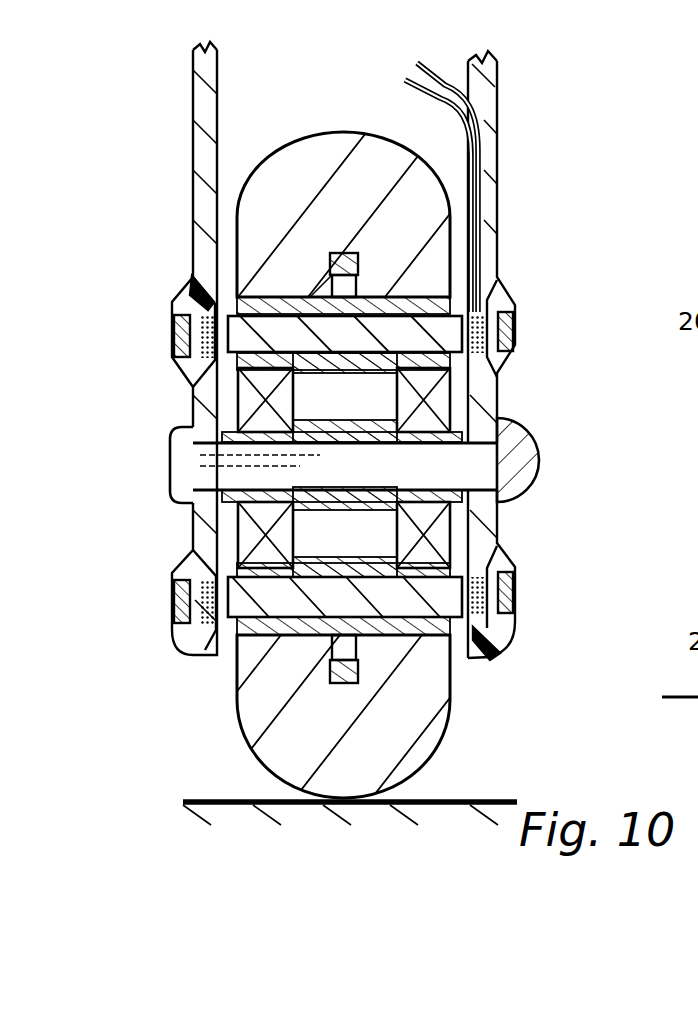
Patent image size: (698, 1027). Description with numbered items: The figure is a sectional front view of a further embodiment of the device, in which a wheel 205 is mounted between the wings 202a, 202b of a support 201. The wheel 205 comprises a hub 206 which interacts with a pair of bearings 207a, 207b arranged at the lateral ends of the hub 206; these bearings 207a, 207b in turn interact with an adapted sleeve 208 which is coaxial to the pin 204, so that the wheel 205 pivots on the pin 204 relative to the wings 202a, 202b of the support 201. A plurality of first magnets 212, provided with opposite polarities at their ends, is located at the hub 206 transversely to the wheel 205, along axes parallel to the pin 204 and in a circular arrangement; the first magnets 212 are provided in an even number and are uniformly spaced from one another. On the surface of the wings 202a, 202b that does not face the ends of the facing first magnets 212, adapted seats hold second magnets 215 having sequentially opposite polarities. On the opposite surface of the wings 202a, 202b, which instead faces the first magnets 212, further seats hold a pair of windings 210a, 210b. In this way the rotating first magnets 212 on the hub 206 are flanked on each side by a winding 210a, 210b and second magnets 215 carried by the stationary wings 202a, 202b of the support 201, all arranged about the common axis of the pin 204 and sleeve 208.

The support 201 is at (508, 62).
The wing 202a is at (490, 102).
The wing 202b is at (183, 128).
The pin 204 is at (507, 465).
The wheel 205 is at (323, 163).
The hub 206 is at (480, 228).
The bearing 207a is at (437, 388).
The bearing 207b is at (227, 387).
The sleeve 208 is at (363, 487).
The winding 210a is at (497, 653).
The winding 210b is at (192, 283).
The first magnets 212 is at (433, 340).
The second magnets 215 is at (517, 325).